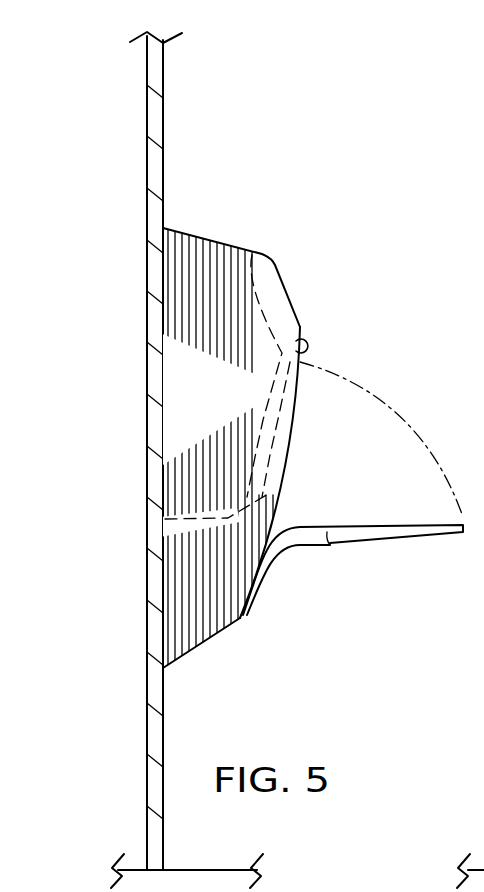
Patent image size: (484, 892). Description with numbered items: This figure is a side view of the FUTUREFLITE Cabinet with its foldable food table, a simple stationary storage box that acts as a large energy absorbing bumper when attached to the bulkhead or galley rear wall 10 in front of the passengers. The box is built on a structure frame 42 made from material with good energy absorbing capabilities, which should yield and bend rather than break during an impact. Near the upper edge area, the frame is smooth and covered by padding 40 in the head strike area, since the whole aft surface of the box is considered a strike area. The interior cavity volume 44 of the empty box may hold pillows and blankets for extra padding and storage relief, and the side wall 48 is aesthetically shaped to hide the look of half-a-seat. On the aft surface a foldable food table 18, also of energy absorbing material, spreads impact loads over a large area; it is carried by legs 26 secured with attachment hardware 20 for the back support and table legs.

The bulkhead or galley rear wall 10 is at (163, 165).
The cabinet storage volume cavity 44 is at (185, 257).
The padding in the head strike area 40 is at (291, 302).
The structure frame of cabinet 42 is at (300, 347).
The side wall of cabinet 48 is at (205, 388).
The seat back mounted foldable food table 18 is at (412, 525).
The legs, food table 26 is at (273, 562).
The attachment hardware for back support and table legs 20 is at (243, 612).